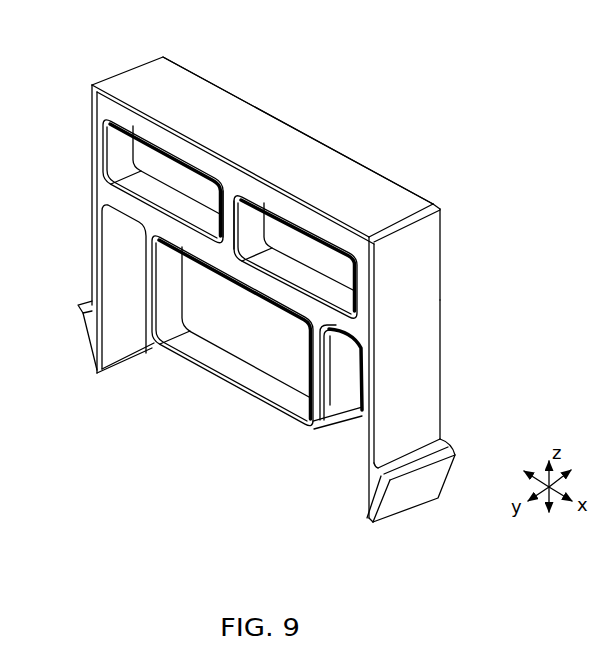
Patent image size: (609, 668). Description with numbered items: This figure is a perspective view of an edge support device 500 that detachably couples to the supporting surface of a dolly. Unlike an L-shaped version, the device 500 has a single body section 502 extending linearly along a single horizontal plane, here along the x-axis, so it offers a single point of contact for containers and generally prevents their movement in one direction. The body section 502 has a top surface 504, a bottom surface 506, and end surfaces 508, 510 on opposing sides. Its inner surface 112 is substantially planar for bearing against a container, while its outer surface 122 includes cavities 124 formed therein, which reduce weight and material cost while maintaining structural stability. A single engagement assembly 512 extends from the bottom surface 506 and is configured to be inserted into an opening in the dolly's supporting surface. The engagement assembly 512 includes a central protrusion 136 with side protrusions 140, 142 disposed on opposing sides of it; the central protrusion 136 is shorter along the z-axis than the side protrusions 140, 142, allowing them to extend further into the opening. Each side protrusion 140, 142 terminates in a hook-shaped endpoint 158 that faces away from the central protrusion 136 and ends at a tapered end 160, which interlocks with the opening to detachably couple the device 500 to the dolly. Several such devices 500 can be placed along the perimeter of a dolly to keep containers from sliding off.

The edge support device 500 is at (437, 124).
The end surface 508 is at (137, 67).
The top surface 504 is at (257, 132).
The inner surface 112 is at (433, 203).
The end surface 510 is at (428, 230).
The side protrusion 142 is at (424, 357).
The body section 502 is at (346, 188).
The outer surface 122 is at (228, 178).
The cavity 124 is at (148, 163).
The side protrusion 140 is at (90, 212).
The central protrusion 136 is at (199, 352).
The engagement assembly 512 is at (194, 404).
The bottom surface 506 is at (347, 337).
The endpoint 158 is at (82, 311).
The tapered end 160 is at (96, 368).